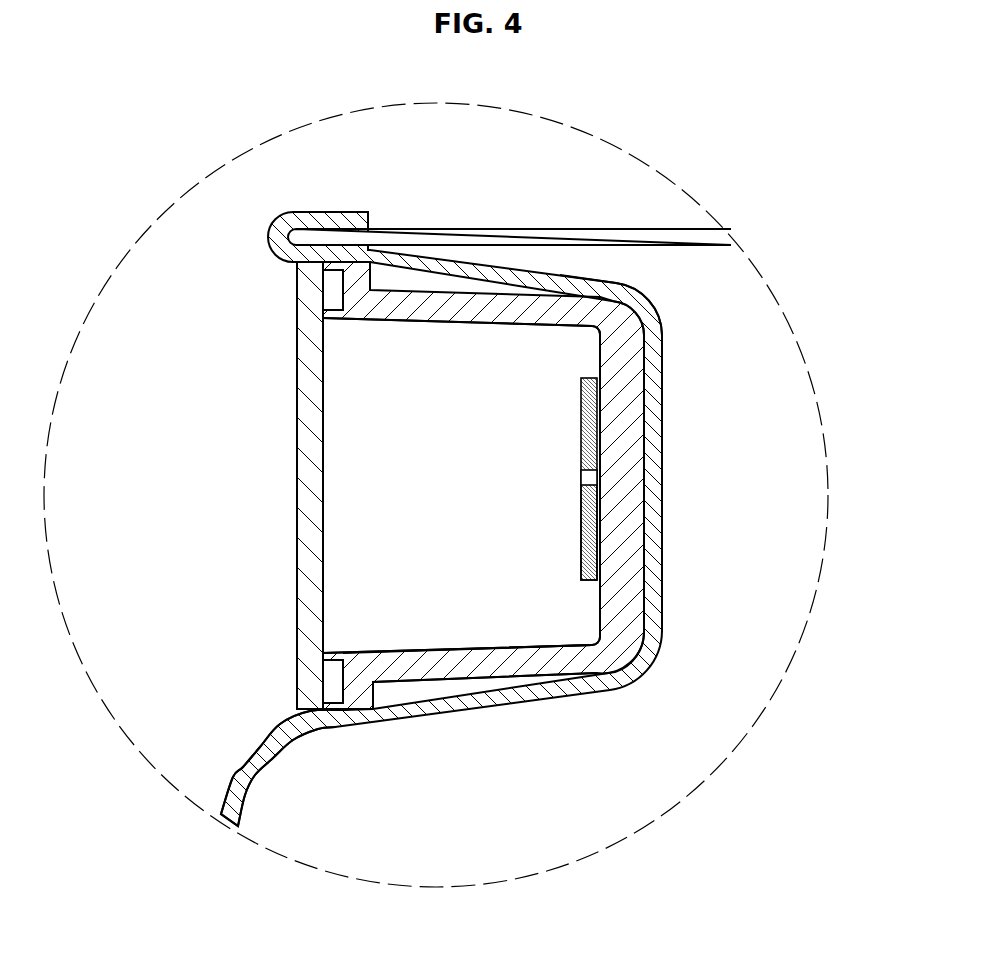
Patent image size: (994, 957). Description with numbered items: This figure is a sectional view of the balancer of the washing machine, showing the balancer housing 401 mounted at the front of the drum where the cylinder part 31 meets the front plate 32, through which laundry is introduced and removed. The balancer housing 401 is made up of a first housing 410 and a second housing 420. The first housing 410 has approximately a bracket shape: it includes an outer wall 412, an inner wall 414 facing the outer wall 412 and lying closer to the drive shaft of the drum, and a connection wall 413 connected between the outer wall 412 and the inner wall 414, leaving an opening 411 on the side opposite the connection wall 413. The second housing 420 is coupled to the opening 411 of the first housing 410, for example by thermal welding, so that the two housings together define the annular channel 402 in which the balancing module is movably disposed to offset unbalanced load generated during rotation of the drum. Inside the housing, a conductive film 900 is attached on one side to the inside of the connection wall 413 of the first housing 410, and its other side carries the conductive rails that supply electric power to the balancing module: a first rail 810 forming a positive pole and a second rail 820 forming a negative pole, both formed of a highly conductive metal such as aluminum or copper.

The cylinder part 31 is at (652, 235).
The front plate 32 is at (267, 766).
The balancer housing 401 is at (260, 592).
The annular channel 402 is at (594, 477).
The first housing 410 is at (537, 696).
The opening 411 is at (343, 407).
The outer wall 412 is at (452, 302).
The connection wall 413 is at (615, 525).
The inner wall 414 is at (452, 672).
The second housing 420 is at (307, 477).
The first rail 810 is at (586, 378).
The second rail 820 is at (592, 572).
The conductive film 900 is at (660, 330).